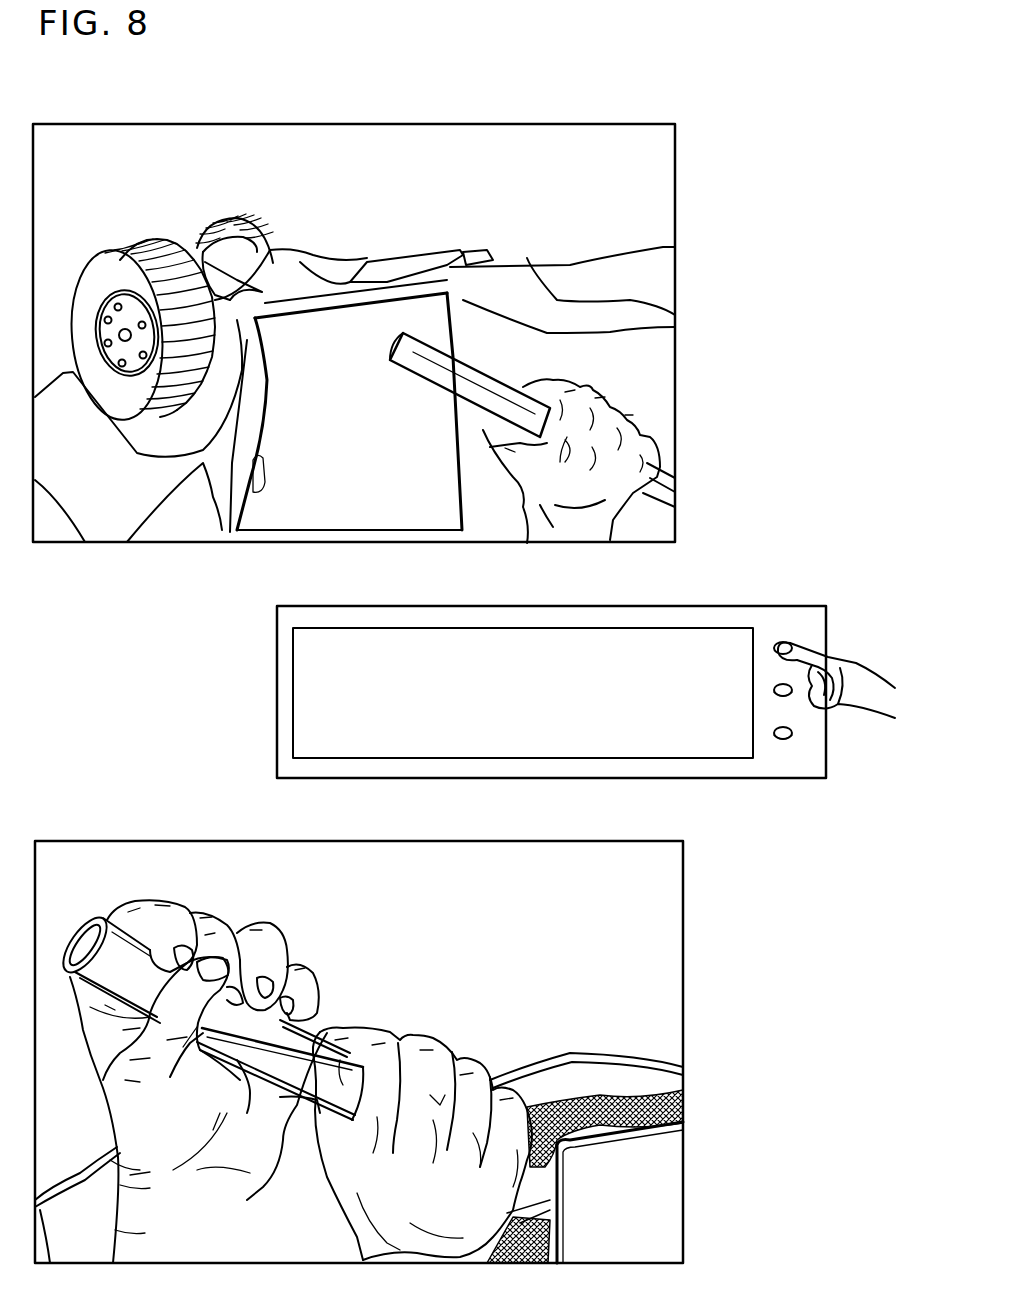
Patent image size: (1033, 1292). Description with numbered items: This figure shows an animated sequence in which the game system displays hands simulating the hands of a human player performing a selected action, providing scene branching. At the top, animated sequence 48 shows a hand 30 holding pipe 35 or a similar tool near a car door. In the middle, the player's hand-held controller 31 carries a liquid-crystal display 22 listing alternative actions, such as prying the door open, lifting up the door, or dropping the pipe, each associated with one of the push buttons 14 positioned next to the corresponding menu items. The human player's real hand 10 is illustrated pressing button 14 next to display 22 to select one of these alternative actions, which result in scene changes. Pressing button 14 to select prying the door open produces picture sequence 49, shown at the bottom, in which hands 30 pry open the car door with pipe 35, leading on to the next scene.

The animated sequence 48 is at (664, 158).
The pipe 35 is at (398, 366).
The hand 30 is at (553, 527).
The hand-held controller 31 is at (723, 770).
The liquid-crystal display 22 is at (687, 647).
The push button 14 is at (790, 640).
The real hand 10 is at (866, 695).
The picture sequence 49 is at (664, 898).